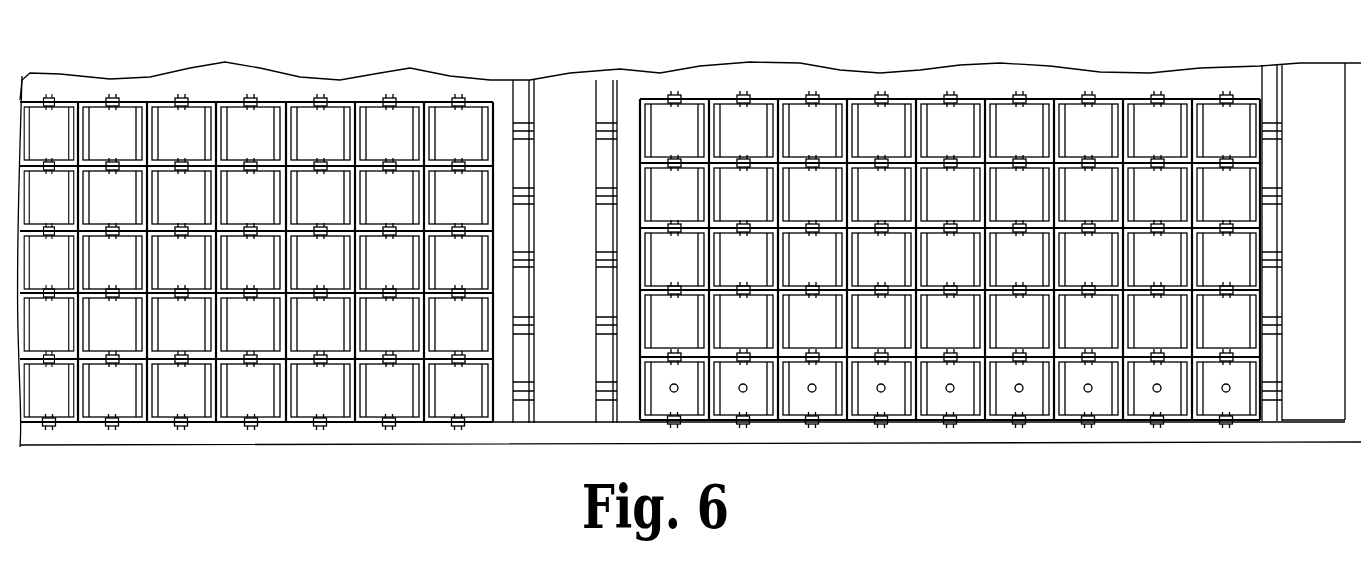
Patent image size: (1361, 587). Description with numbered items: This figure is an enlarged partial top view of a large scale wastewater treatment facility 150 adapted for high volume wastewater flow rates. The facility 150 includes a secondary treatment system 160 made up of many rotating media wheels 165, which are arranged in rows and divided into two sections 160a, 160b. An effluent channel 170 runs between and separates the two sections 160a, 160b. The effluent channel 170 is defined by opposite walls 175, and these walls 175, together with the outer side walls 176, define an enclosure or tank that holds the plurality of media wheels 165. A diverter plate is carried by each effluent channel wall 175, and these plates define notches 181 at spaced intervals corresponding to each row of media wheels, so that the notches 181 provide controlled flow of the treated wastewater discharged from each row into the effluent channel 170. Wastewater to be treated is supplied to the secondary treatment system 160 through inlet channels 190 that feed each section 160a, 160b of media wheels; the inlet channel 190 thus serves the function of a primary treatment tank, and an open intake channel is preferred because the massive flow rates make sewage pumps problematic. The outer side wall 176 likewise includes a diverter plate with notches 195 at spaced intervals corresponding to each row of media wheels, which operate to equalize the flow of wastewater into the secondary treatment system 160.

The facility 150 is at (820, 482).
The secondary treatment system 160 is at (962, 430).
The first section of media wheels 160a is at (950, 268).
The second section of media wheels 160b is at (398, 102).
The rotating media wheel 165 is at (1075, 404).
The effluent channel 170 is at (565, 251).
The effluent channel wall 175 is at (598, 386).
The outer side wall 176 is at (1275, 340).
The notch 181 is at (598, 203).
The inlet channel 190 is at (1303, 242).
The notch 195 is at (1285, 262).